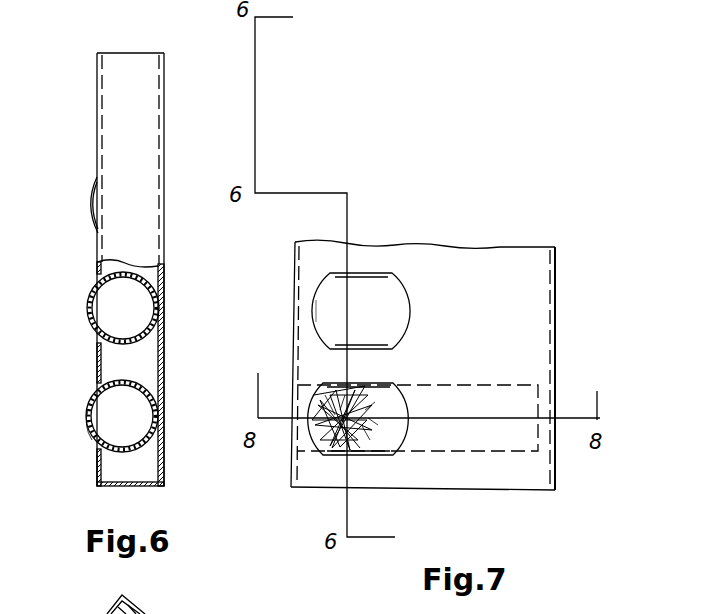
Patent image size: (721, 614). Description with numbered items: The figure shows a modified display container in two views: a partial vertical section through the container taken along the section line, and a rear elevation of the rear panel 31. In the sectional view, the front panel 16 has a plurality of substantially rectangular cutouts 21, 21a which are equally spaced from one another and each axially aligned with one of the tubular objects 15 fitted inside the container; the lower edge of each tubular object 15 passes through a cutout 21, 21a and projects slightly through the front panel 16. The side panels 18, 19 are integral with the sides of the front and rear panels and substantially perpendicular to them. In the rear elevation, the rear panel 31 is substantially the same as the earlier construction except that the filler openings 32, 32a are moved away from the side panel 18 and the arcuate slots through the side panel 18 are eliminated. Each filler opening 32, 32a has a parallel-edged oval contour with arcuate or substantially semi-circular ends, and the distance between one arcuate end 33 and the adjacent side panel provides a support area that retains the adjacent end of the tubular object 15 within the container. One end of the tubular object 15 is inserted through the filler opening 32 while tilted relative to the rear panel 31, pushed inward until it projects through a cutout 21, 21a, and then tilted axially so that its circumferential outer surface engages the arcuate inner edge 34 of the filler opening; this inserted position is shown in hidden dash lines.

In FIG. 6, the tubular object 15 is at (88, 423).
In FIG. 6, the front panel 16 is at (94, 467).
In FIG. 6, the side panel 18 is at (148, 125).
In FIG. 7, the side panel 18 is at (292, 350).
In FIG. 7, the side panel 19 is at (553, 350).
In FIG. 6, the rectangular cutout 21 is at (95, 391).
In FIG. 6, the rectangular cutout 21a is at (95, 335).
In FIG. 6, the rear panel 31 is at (165, 330).
In FIG. 7, the rear panel 31 is at (463, 473).
In FIG. 7, the filler opening 32 is at (405, 410).
In FIG. 7, the filler opening 32a is at (393, 285).
In FIG. 7, the arcuate end 33 is at (314, 311).
In FIG. 7, the arcuate inner edge 34 is at (410, 313).